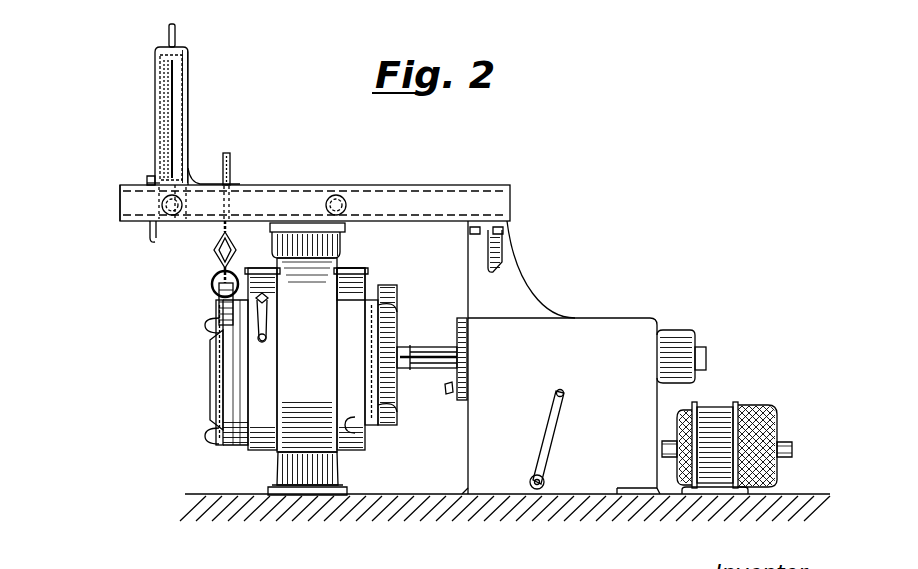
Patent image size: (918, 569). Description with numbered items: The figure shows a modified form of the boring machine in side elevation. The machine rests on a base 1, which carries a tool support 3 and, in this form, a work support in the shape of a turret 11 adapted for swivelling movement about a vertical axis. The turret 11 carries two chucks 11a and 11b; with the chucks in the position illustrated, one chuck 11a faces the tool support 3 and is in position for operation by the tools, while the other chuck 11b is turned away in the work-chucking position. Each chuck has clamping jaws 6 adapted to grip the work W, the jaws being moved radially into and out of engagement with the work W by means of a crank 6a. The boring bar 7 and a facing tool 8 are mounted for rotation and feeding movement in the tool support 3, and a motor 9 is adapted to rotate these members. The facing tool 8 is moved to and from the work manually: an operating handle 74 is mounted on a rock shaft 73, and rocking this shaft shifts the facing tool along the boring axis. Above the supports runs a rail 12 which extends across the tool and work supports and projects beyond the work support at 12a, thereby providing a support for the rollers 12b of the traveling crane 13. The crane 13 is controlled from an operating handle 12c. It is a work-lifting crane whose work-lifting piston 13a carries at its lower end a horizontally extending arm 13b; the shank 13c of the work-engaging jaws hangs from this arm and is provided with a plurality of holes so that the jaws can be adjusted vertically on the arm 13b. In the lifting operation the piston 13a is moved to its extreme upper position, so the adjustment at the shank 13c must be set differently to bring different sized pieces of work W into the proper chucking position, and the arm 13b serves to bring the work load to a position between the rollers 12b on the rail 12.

The base 1 is at (230, 508).
The tool support 3 is at (623, 330).
The clamping jaws 6 is at (380, 437).
The crank 6a is at (262, 313).
The boring bar 7 is at (440, 347).
The facing tool 8 is at (450, 393).
The motor 9 is at (732, 405).
The turret 11 is at (297, 380).
The chuck 11a is at (365, 268).
The chuck 11b is at (258, 365).
The rail 12 is at (410, 187).
The rail extension 12a is at (133, 200).
The rollers 12b is at (340, 153).
The operating handle 12c is at (152, 235).
The traveling crane 13 is at (190, 133).
The work-lifting piston 13a is at (147, 183).
The horizontally extending arm 13b is at (192, 207).
The shank 13c is at (230, 167).
The rock shaft 73 is at (544, 483).
The operating handle 74 is at (557, 418).
The work W is at (395, 290).